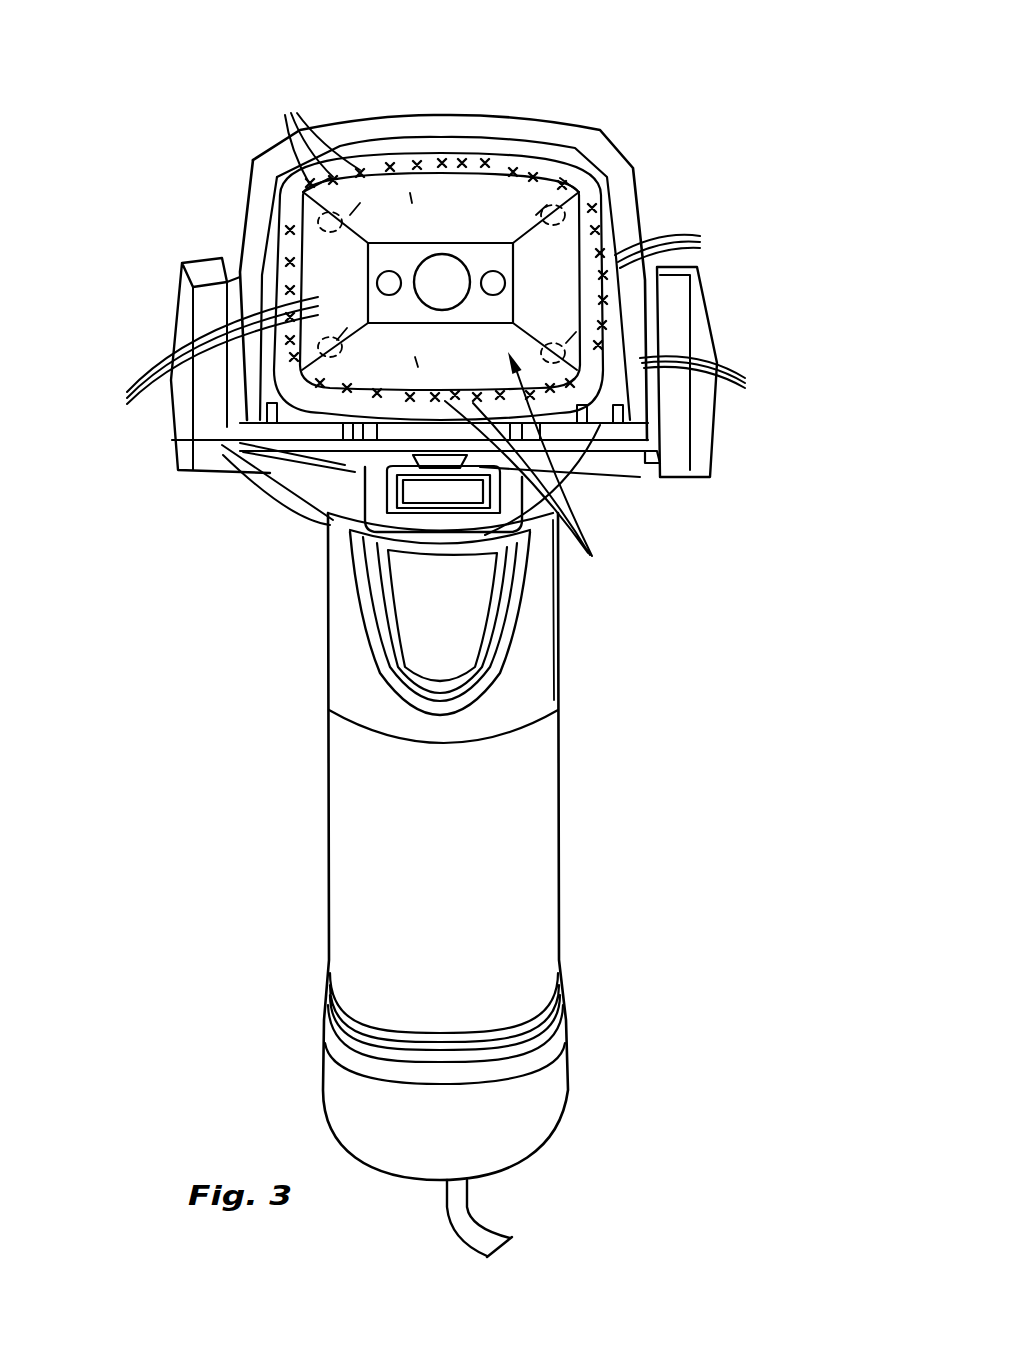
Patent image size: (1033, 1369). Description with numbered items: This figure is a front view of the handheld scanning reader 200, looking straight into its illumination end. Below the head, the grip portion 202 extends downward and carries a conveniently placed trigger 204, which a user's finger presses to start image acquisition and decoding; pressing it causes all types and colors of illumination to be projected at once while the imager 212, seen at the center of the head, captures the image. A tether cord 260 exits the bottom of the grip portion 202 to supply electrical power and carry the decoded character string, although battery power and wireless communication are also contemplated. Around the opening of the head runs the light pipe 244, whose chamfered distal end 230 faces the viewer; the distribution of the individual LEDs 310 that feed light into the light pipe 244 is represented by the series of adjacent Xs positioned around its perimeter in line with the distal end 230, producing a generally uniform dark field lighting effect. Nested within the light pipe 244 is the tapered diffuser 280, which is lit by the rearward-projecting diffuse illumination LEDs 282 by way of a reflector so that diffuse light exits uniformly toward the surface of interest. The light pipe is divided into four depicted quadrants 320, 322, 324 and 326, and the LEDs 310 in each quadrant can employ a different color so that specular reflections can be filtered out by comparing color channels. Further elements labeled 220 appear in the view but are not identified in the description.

The reader 200 is at (625, 80).
The grip portion 202 is at (563, 764).
The trigger 204 is at (520, 592).
The imager 212 is at (427, 303).
The light sources 220 is at (389, 271).
The distal end 230 is at (630, 226).
The light pipe 244 is at (586, 164).
The tether cord 260 is at (478, 1223).
The diffuser 280 is at (553, 246).
The diffuse illumination LEDs 282 is at (473, 187).
The LEDs 310 is at (435, 337).
The quadrant 320 is at (575, 318).
The quadrant 322 is at (508, 423).
The quadrant 324 is at (314, 254).
The quadrant 326 is at (504, 188).